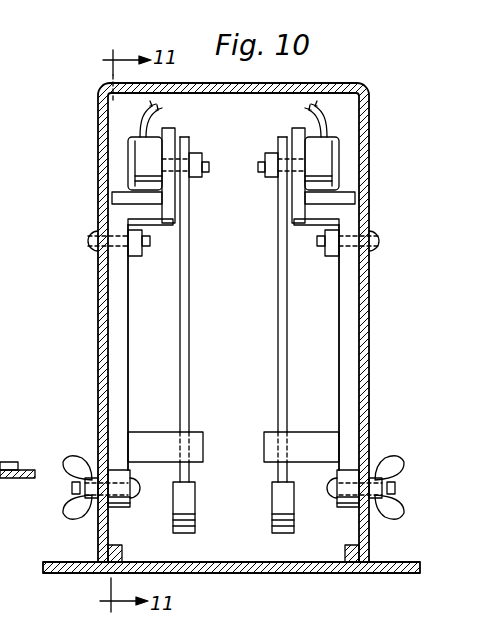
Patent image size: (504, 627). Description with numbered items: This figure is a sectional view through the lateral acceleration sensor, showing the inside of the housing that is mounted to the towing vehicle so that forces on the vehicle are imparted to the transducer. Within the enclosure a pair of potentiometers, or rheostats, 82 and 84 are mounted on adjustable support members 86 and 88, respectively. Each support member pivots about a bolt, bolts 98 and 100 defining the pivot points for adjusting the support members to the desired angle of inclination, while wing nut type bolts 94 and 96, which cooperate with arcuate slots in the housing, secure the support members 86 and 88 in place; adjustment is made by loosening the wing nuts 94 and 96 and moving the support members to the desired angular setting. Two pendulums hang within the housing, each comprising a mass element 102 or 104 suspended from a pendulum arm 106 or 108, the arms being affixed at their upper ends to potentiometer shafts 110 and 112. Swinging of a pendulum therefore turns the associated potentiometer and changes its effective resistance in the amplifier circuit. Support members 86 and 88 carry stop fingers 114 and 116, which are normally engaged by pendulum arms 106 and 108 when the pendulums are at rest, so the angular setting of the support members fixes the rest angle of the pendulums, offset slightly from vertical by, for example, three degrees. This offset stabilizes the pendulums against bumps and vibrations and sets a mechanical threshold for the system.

The potentiometer 82 is at (128, 162).
The potentiometer 84 is at (339, 162).
The adjustable support member 86 is at (128, 327).
The adjustable support member 88 is at (341, 344).
The wing nut type bolt 94 is at (70, 513).
The wing nut type bolt 96 is at (397, 513).
The bolt 98 is at (97, 240).
The bolt 100 is at (379, 240).
The mass element 102 is at (192, 493).
The mass element 104 is at (273, 507).
The pendulum arm 106 is at (189, 270).
The pendulum arm 108 is at (278, 328).
The potentiometer shaft 110 is at (176, 166).
The potentiometer shaft 112 is at (291, 162).
The stop finger 114 is at (150, 443).
The stop finger 116 is at (304, 443).